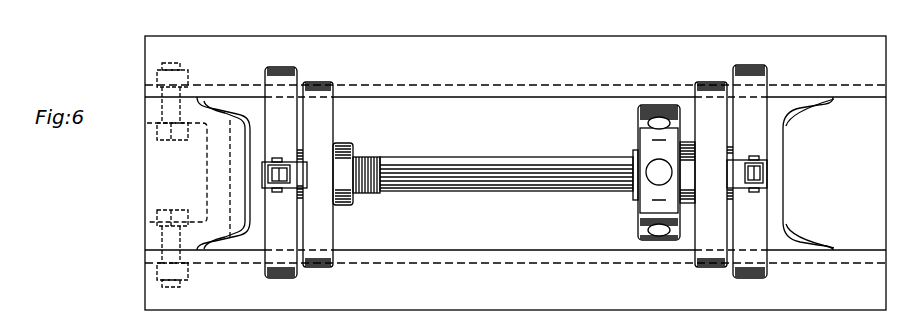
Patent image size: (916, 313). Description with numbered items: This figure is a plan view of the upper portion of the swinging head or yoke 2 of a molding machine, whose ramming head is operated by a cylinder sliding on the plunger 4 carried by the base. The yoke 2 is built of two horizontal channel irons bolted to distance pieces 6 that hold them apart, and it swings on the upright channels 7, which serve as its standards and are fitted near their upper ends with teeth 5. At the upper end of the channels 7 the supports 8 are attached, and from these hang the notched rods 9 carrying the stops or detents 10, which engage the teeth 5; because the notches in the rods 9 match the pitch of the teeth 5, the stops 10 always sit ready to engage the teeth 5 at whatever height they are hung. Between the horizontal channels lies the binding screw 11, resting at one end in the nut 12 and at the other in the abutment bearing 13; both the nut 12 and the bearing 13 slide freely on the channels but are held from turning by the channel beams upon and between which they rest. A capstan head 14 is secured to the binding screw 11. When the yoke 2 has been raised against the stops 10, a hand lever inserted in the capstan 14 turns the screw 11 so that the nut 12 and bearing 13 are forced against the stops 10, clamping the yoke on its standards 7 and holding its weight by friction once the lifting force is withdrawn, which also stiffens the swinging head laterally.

The swinging head or yoke 2 is at (515, 173).
The plunger 4 is at (145, 181).
The teeth 5 is at (262, 174).
The distance pieces 6 is at (163, 165).
The channels 7 is at (217, 252).
The supports 8 is at (293, 190).
The notched rods 9 is at (766, 177).
The stops or detents 10 is at (798, 147).
The binding screw 11 is at (505, 185).
The nut 12 is at (318, 174).
The abutment bearing 13 is at (711, 174).
The capstan head 14 is at (638, 123).